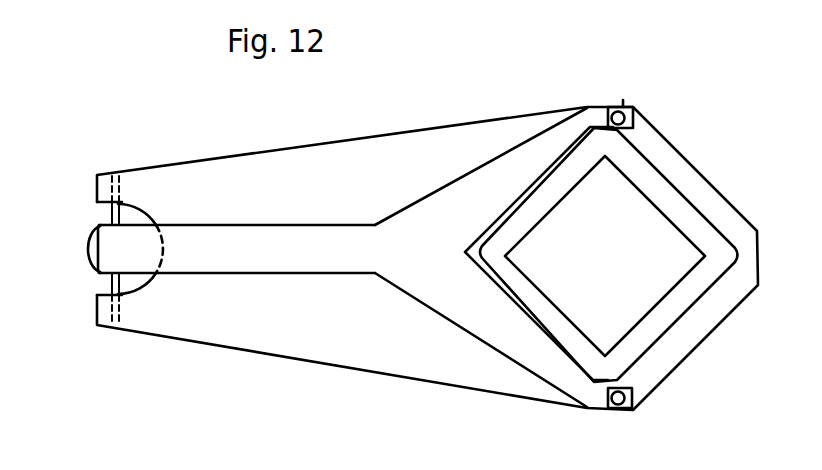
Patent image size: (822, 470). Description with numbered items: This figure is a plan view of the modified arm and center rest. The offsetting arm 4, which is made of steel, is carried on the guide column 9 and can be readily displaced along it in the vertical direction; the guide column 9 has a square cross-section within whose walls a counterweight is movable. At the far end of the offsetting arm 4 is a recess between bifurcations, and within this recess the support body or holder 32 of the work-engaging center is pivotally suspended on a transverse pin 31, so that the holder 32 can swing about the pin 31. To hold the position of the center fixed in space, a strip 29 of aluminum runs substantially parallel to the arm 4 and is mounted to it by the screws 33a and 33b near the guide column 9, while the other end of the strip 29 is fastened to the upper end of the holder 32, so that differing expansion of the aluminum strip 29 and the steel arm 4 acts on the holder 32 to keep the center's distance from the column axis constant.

The offsetting arm 4 is at (362, 157).
The strip 29 is at (235, 243).
The support body or holder 32 is at (92, 244).
The transverse pin 31 is at (108, 286).
The guide column 9 is at (690, 225).
The screw 33a is at (634, 409).
The screw 33b is at (626, 100).